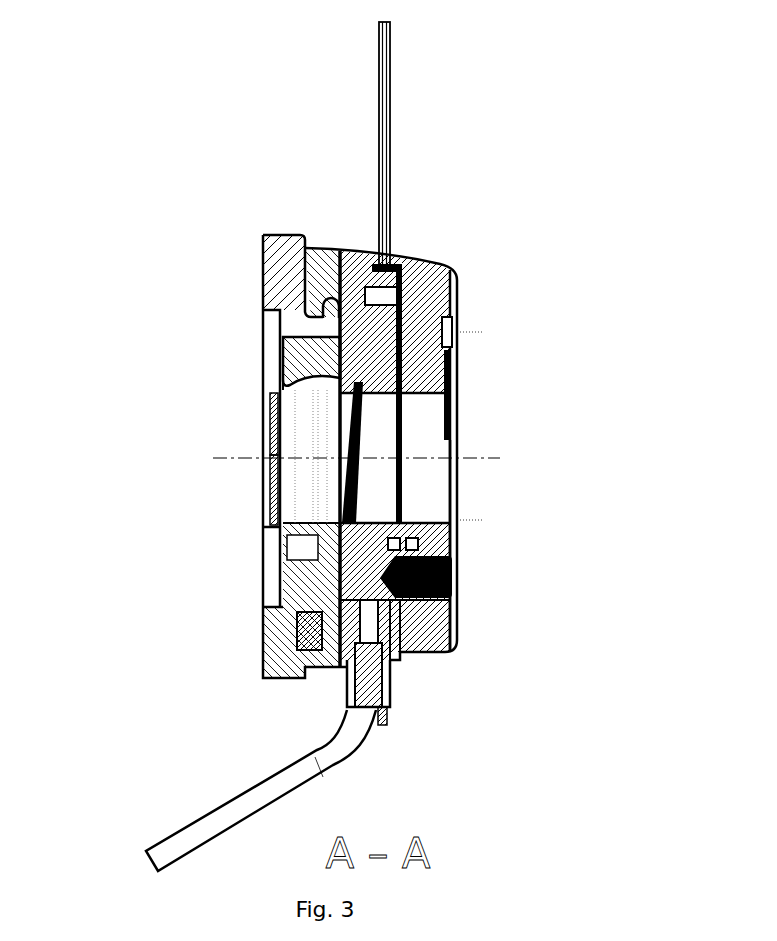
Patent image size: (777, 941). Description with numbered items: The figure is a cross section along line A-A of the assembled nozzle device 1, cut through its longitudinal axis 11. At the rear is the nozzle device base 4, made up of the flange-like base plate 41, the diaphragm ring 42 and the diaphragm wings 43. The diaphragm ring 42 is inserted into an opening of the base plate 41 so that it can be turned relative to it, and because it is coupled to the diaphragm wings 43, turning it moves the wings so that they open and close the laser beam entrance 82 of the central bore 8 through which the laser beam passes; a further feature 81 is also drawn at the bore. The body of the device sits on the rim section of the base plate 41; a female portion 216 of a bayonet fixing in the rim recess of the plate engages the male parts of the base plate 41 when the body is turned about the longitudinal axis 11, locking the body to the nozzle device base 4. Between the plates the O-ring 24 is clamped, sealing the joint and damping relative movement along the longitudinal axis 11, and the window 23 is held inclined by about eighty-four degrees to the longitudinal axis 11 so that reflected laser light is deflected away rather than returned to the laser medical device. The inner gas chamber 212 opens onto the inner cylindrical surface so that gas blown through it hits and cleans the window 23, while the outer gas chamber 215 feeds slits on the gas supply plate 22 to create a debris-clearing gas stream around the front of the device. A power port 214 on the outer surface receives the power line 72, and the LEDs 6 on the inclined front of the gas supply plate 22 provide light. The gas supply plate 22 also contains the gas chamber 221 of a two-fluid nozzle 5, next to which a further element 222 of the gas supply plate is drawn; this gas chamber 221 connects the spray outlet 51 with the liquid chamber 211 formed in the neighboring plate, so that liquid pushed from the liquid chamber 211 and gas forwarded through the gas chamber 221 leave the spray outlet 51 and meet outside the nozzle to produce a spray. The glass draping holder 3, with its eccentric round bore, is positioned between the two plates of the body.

The nozzle device 1 is at (216, 263).
The draping holder 3 is at (386, 97).
The nozzle device base 4 is at (277, 226).
The two-fluid nozzle 5 is at (462, 577).
The LED 6 is at (460, 327).
The bore 8 is at (366, 492).
The longitudinal axis 11 is at (218, 458).
The gas supply plate 22 is at (437, 250).
The window 23 is at (455, 415).
The O-ring 24 is at (327, 343).
The base plate 41 is at (260, 262).
The diaphragm ring 42 is at (293, 363).
The diaphragm wings 43 is at (268, 413).
The spray outlet 51 is at (460, 563).
The power line 72 is at (335, 757).
The chamber wall 81 is at (450, 443).
The laser beam entrance 82 is at (270, 494).
The liquid chamber 211 is at (385, 582).
The inner gas chamber 212 is at (350, 517).
The power port 214 is at (393, 688).
The outer gas chamber 215 is at (361, 232).
The female portion of the bayonet fixing 216 is at (330, 298).
The gas chamber 221 is at (447, 548).
The valve element 222 is at (398, 546).